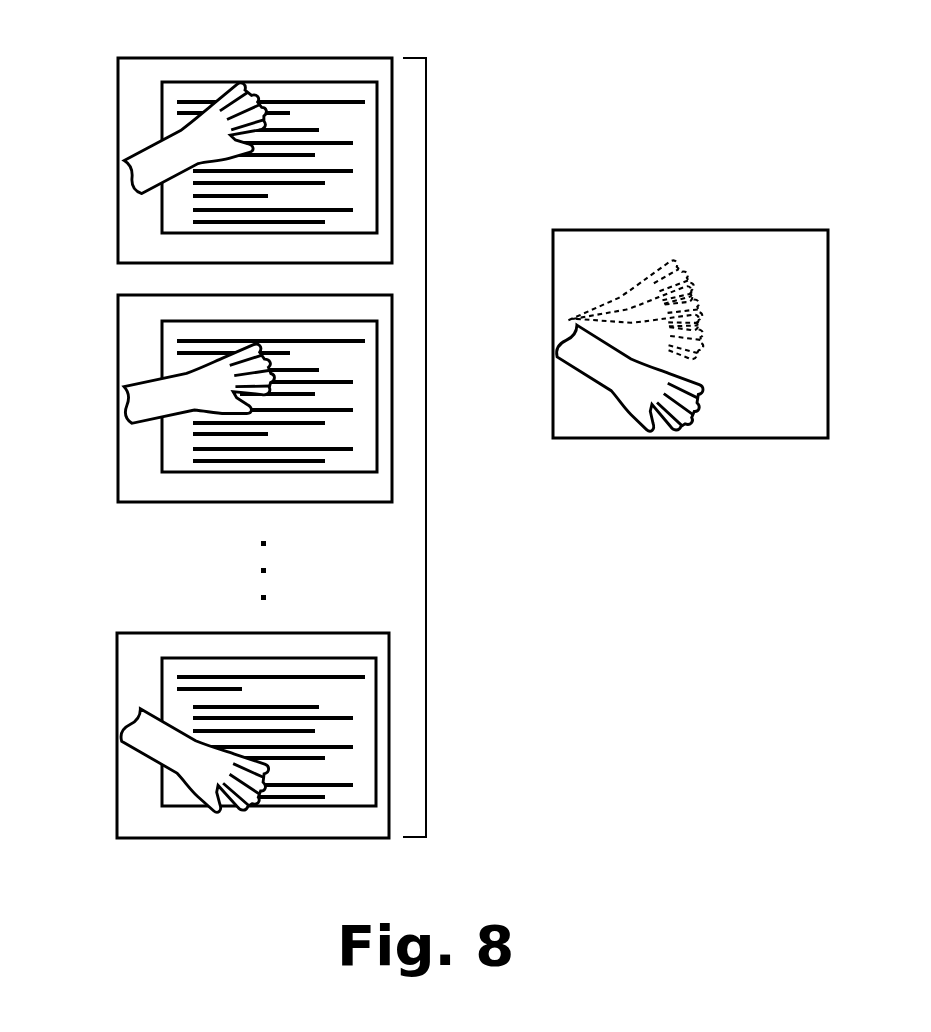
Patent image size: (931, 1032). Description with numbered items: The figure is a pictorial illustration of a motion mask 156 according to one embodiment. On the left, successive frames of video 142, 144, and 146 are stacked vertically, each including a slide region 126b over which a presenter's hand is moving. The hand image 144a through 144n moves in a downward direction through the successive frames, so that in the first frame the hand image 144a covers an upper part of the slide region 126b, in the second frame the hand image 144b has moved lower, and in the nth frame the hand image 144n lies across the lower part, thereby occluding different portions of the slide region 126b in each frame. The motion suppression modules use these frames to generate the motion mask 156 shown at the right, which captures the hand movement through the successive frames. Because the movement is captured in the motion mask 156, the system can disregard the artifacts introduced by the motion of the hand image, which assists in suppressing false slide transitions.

The frame of video 142 is at (134, 57).
The frame of video 144 is at (134, 295).
The frame of video 146 is at (134, 633).
The slide region 126b is at (161, 99).
The hand image 144a is at (130, 173).
The hand image 144b is at (130, 412).
The hand image 144n is at (130, 743).
The motion mask 156 is at (802, 230).